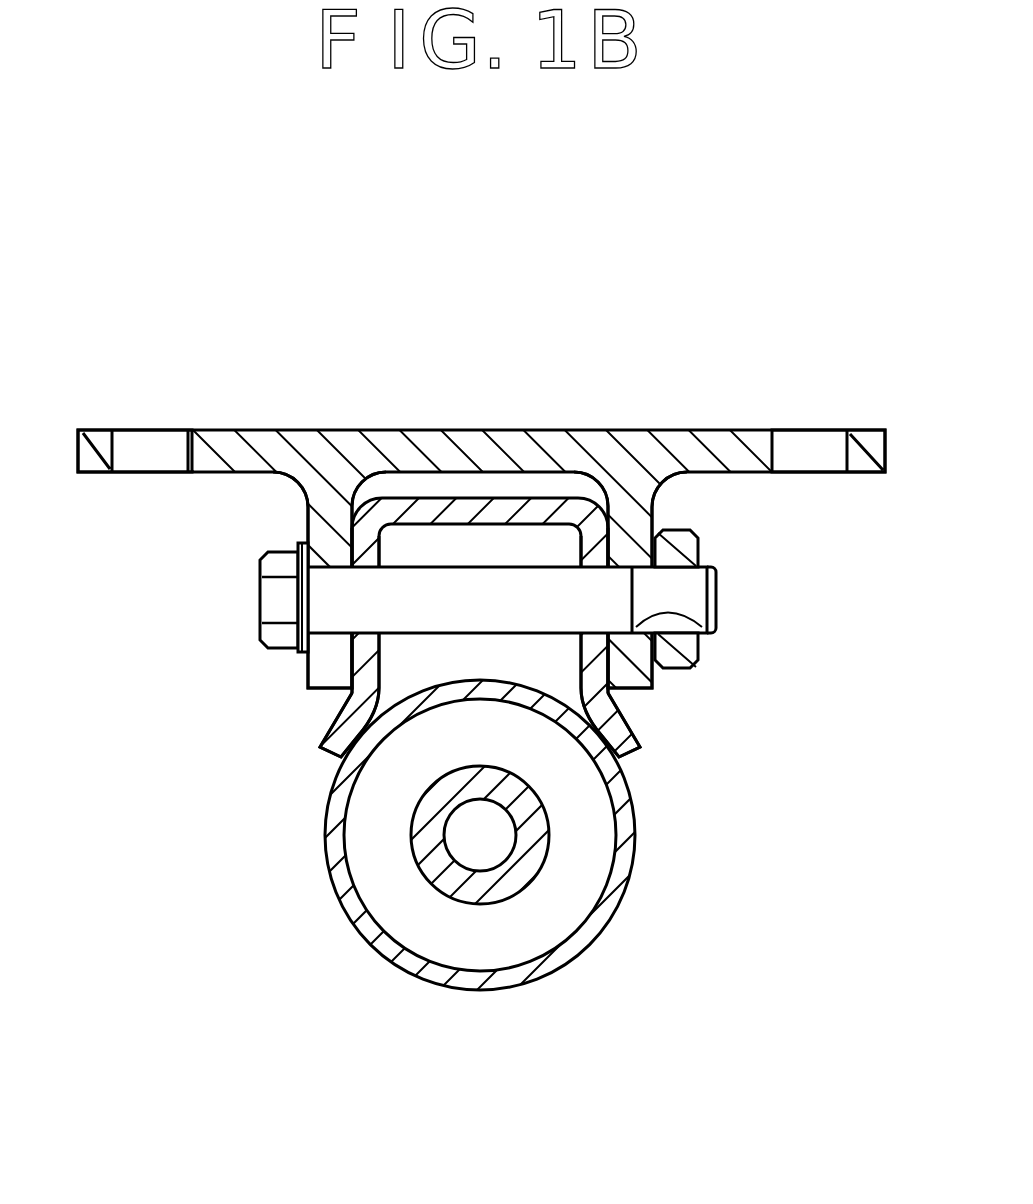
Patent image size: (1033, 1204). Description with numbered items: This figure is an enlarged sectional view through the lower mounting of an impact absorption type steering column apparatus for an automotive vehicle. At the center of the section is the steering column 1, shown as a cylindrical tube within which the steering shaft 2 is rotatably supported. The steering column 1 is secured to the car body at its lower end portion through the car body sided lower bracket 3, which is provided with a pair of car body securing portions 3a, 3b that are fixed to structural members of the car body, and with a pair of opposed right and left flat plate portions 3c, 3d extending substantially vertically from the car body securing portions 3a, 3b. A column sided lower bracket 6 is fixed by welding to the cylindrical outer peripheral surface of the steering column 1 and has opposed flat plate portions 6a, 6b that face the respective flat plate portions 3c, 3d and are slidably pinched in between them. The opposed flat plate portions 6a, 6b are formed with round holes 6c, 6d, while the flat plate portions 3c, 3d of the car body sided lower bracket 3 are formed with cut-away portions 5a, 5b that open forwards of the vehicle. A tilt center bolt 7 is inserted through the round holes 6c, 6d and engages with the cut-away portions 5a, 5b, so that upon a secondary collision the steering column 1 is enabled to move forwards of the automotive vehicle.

The steering column 1 is at (435, 982).
The steering shaft 2 is at (513, 903).
The car body sided lower bracket 3 is at (577, 428).
The car body securing portion 3a is at (249, 432).
The car body securing portion 3b is at (755, 433).
The opposed flat plate portion 3c is at (318, 535).
The opposed flat plate portion 3d is at (632, 547).
The cut-away portion 5a is at (302, 600).
The cut-away portion 5b is at (703, 634).
The column sided lower bracket 6 is at (460, 495).
The opposed flat plate portion 6a is at (356, 676).
The opposed flat plate portion 6b is at (618, 678).
The round hole 6c is at (367, 675).
The round hole 6d is at (593, 668).
The tilt center bolt 7 is at (718, 598).